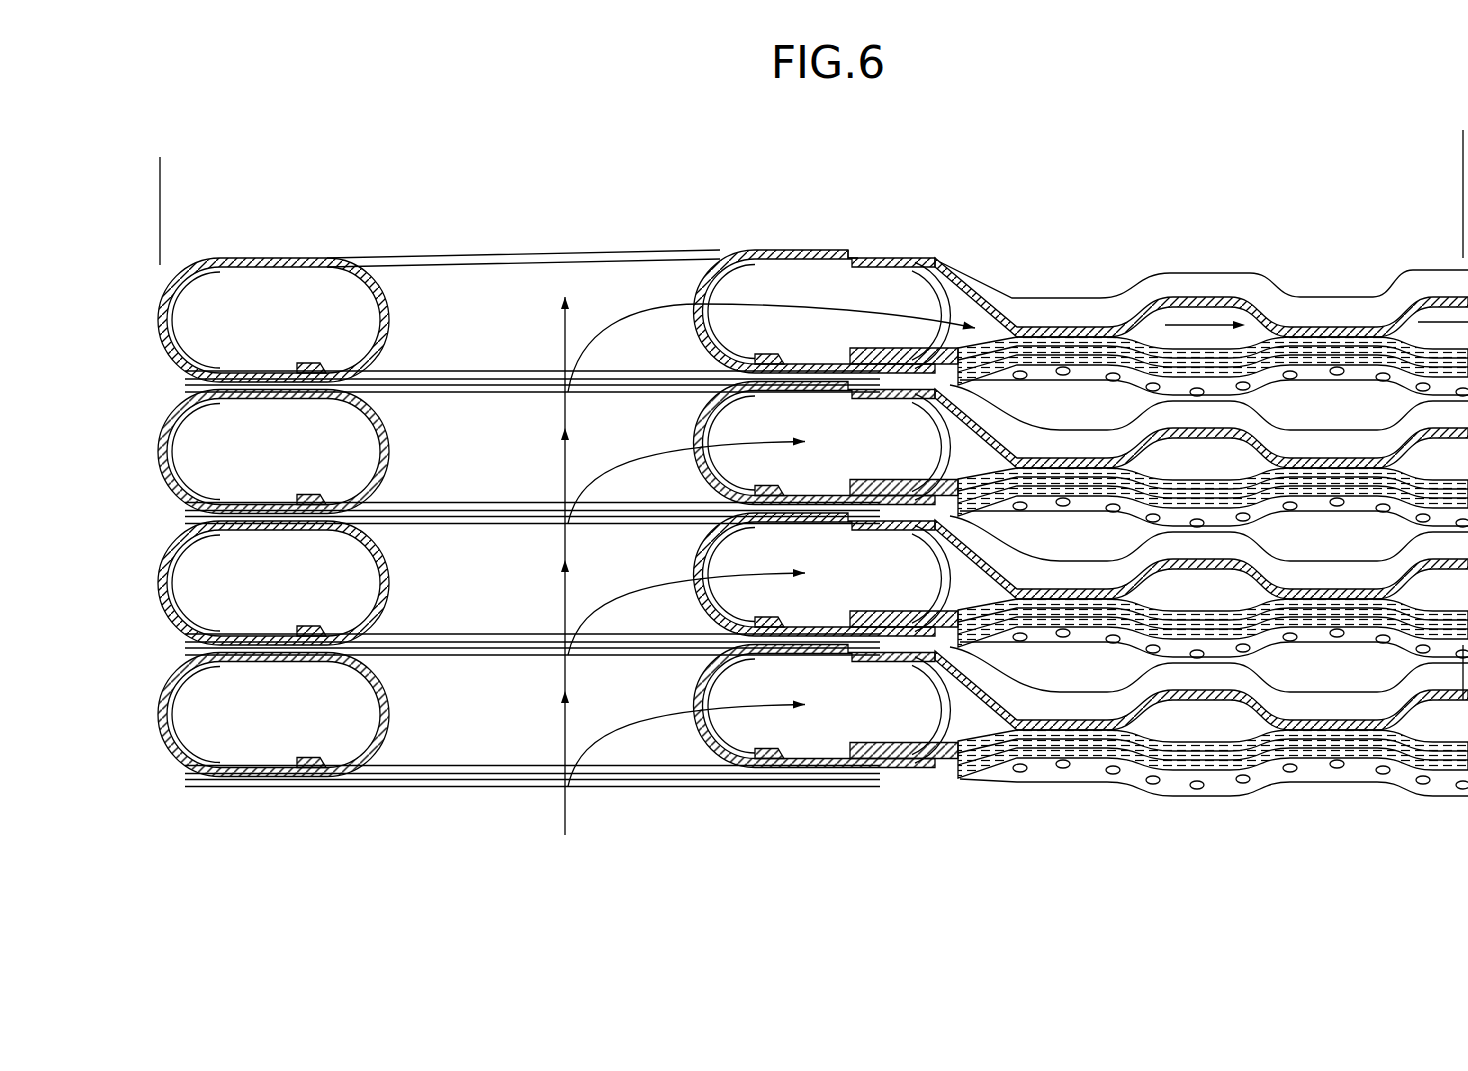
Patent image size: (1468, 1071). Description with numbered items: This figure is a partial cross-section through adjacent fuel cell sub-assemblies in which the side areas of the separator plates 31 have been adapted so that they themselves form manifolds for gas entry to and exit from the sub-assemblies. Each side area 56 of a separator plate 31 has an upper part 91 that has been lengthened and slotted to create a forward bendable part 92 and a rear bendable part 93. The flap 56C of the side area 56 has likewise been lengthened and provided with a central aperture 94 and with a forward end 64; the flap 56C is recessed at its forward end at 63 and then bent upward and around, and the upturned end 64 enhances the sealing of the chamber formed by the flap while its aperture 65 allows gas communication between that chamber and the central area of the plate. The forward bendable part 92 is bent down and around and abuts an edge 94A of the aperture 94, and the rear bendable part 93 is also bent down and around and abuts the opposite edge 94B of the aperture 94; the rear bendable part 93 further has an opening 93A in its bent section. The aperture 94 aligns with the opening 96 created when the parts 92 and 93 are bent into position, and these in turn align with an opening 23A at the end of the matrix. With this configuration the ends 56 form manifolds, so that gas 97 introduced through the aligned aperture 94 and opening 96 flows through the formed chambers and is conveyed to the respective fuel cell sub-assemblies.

The opening 23A is at (428, 393).
The first separator plate 31 is at (252, 636).
The side area 56 is at (851, 252).
The flap 56C is at (232, 378).
The recessed forward end 63 is at (976, 292).
The upturned end 64 is at (880, 388).
The aperture 65 is at (947, 268).
The upper part 91 is at (782, 250).
The forward bendable part 92 is at (273, 291).
The rear bendable part 93 is at (815, 320).
The opening 93A is at (690, 303).
The central aperture 94 is at (532, 385).
The edge of aperture 94A is at (318, 363).
The opposite edge of aperture 94B is at (768, 354).
The opening 96 is at (486, 258).
The gas 97 is at (565, 828).